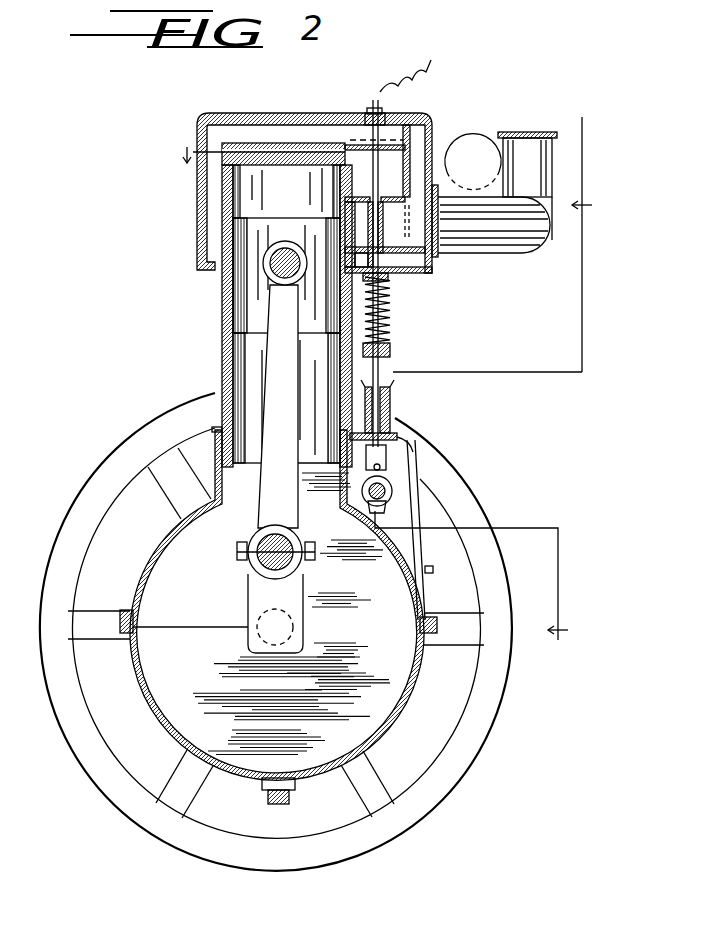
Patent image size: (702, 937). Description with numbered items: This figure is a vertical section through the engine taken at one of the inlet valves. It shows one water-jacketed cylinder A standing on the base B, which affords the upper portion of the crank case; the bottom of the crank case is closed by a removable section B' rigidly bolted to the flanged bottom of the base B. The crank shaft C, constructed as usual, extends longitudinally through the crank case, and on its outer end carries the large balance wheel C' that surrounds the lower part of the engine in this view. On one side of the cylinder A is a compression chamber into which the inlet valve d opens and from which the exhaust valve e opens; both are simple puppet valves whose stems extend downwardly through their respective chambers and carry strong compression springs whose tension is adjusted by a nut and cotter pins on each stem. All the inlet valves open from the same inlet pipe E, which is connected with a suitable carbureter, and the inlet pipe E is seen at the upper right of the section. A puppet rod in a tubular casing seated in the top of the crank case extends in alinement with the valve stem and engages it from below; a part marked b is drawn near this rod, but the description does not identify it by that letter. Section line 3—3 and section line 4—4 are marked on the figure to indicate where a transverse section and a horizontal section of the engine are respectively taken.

The cylinder A is at (220, 284).
The base B is at (276, 632).
The removable section B' is at (313, 840).
The crank shaft C is at (388, 435).
The balance wheel C' is at (473, 490).
The inlet pipe E is at (540, 247).
The governor rod b is at (420, 523).
The inlet valve d is at (437, 153).
The exhaust valve e is at (373, 194).
The section line 3— 3 is at (483, 383).
The section line 4— 4 is at (252, 156).